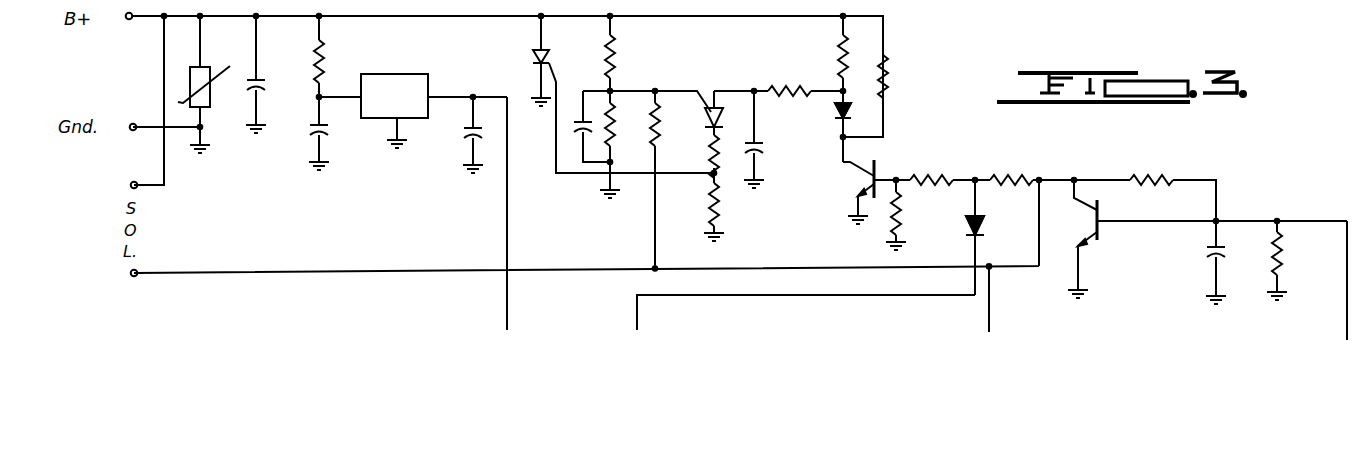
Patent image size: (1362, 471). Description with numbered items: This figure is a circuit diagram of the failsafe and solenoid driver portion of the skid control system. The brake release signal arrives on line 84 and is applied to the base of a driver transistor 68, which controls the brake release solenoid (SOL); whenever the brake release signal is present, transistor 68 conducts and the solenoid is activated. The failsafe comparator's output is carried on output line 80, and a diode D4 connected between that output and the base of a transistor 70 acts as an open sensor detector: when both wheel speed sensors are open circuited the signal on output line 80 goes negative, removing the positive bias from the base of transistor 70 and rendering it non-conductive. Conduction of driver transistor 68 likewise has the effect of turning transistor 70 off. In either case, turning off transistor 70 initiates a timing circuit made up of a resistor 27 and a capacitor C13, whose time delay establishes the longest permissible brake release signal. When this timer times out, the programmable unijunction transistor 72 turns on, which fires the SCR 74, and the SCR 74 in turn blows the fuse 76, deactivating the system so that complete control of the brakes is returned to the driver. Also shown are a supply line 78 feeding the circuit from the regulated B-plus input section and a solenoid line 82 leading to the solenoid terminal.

The fuse 76 is at (212, 84).
The SCR 74 is at (532, 52).
The programmable unijunction transistor 72 is at (700, 90).
The resistor 27 is at (794, 88).
The capacitor C13 is at (761, 154).
The transistor 70 is at (880, 166).
The diode D4 is at (980, 228).
The driver transistor 68 is at (1099, 241).
The regulated supply line 78 is at (507, 318).
The output line 80 is at (637, 318).
The solenoid line 82 is at (990, 332).
The line 84 is at (1347, 313).